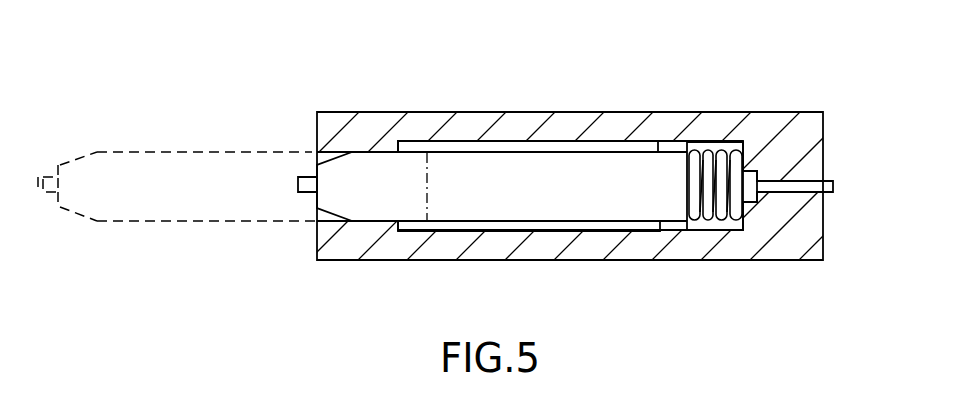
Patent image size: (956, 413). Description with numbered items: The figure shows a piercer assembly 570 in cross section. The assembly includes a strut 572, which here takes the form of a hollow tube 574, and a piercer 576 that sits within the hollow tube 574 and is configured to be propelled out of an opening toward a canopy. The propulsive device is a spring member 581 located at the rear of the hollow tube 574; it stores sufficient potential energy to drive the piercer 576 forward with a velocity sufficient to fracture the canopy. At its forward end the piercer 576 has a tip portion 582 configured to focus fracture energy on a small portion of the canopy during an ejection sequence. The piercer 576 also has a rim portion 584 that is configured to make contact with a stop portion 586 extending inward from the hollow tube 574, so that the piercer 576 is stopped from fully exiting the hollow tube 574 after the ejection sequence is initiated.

The piercer assembly 570 is at (173, 82).
The strut 572 is at (512, 118).
The hollow tube 574 is at (570, 117).
The piercer 576 is at (630, 163).
The spring member 581 is at (722, 208).
The tip portion 582 is at (302, 176).
The rim portion 584 is at (673, 218).
The stop portion 586 is at (398, 223).